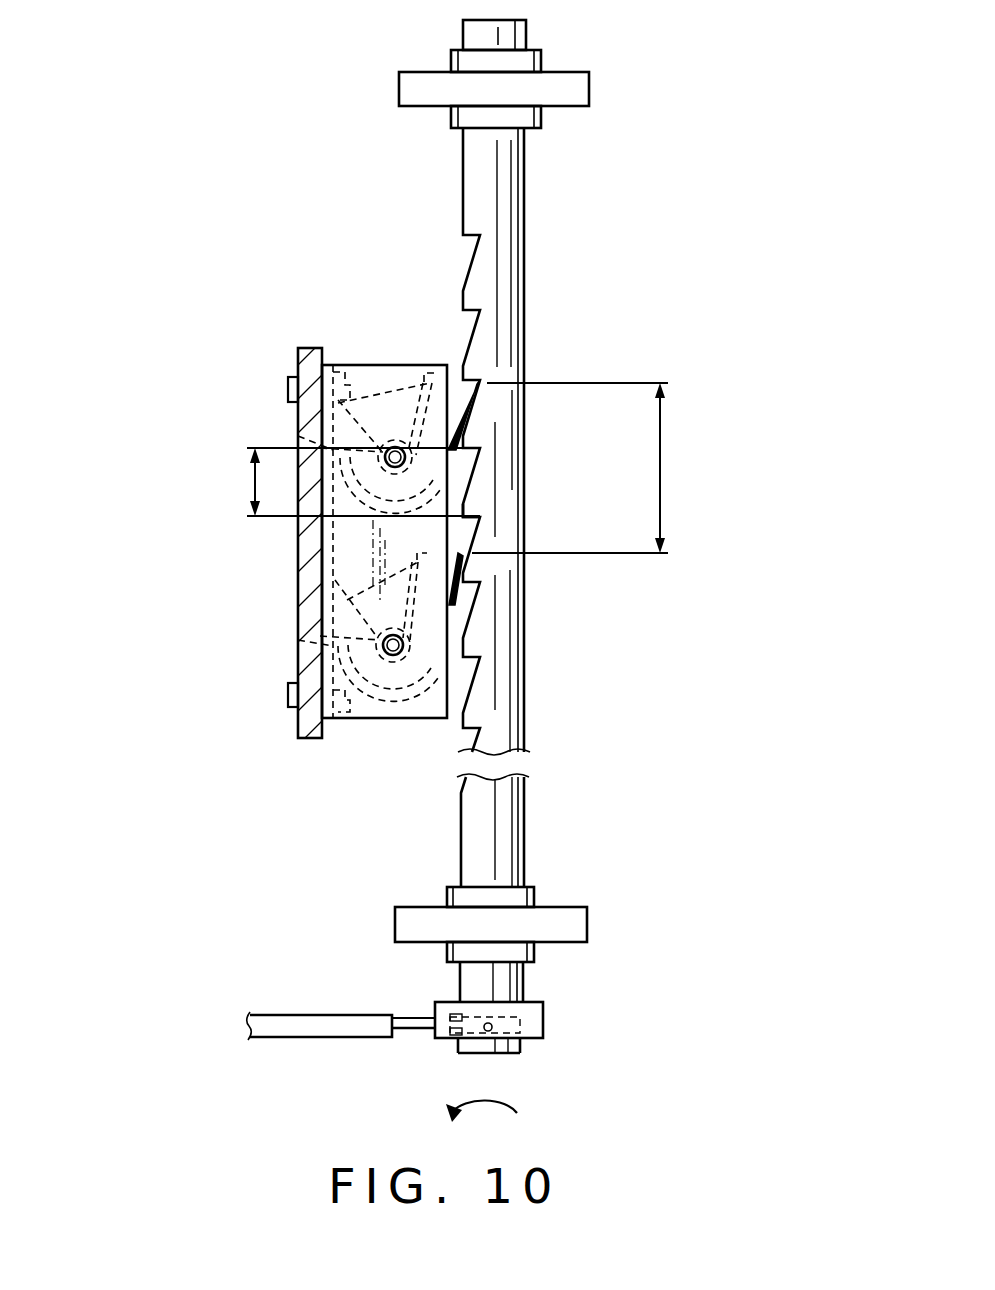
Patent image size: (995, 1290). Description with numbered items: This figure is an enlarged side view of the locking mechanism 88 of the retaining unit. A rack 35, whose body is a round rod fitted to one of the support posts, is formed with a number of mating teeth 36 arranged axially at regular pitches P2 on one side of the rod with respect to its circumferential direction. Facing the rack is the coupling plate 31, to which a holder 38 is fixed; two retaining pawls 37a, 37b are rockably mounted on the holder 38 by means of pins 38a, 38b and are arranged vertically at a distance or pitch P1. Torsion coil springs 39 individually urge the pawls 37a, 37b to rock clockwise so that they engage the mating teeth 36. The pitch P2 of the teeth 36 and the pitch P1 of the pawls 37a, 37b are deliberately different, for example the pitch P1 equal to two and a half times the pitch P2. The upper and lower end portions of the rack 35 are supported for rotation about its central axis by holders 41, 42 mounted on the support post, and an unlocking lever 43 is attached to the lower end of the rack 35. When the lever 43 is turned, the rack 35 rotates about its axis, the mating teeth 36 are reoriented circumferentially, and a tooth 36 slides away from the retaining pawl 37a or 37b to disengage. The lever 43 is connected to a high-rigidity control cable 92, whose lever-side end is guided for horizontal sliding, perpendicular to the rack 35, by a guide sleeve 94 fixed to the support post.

The coupling plate 31 is at (298, 555).
The rack 35 is at (514, 195).
The mating teeth 36 is at (463, 508).
The retaining pawl 37a is at (472, 390).
The retaining pawl 37b is at (460, 590).
The holder 38 is at (397, 375).
The pin 38a is at (392, 445).
The pin 38b is at (393, 657).
The torsion coil spring 39 is at (298, 434).
The holder 41 is at (589, 92).
The holder 42 is at (587, 927).
The unlocking lever 43 is at (543, 1022).
The locking mechanism 88 is at (414, 476).
The control cable 92 is at (404, 1017).
The guide sleeve 94 is at (367, 1030).
The pitch P1 is at (587, 468).
The pitch P2 is at (351, 482).